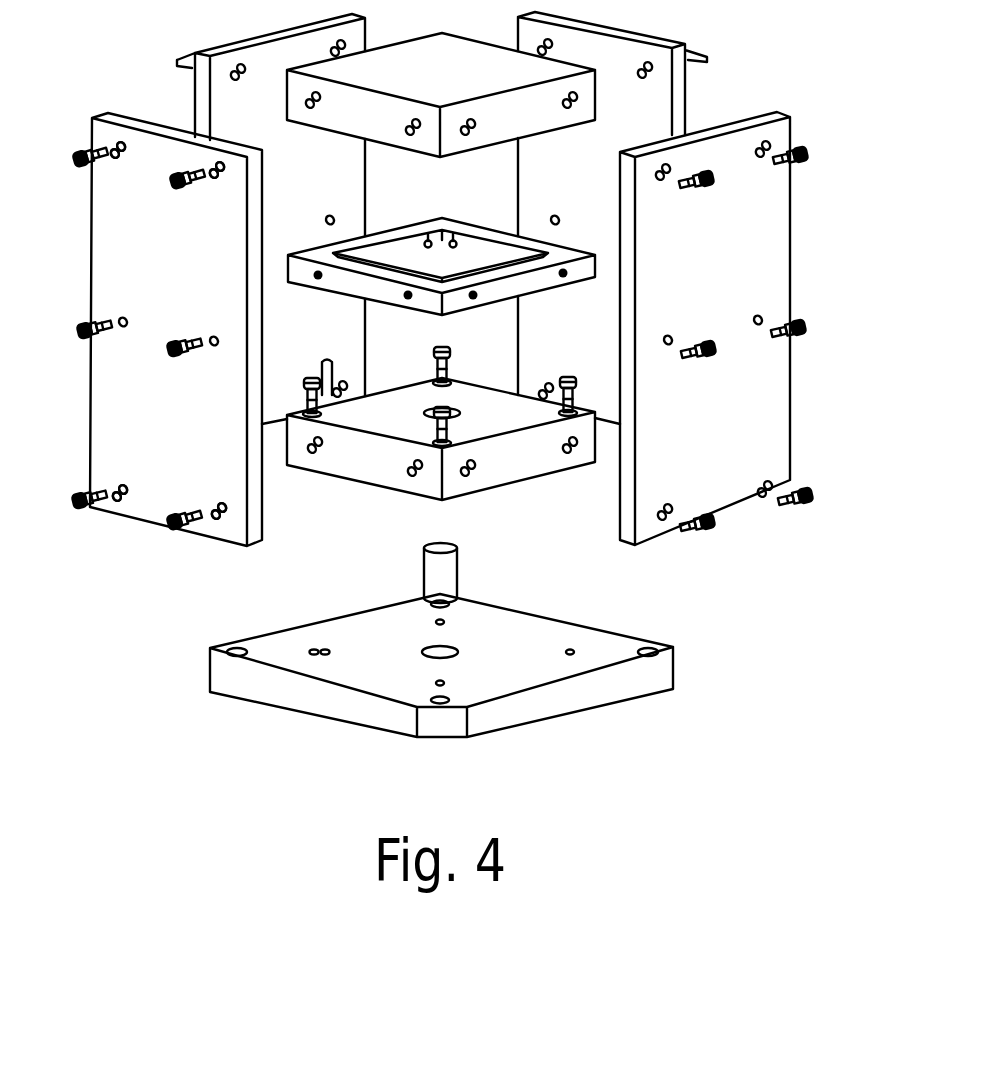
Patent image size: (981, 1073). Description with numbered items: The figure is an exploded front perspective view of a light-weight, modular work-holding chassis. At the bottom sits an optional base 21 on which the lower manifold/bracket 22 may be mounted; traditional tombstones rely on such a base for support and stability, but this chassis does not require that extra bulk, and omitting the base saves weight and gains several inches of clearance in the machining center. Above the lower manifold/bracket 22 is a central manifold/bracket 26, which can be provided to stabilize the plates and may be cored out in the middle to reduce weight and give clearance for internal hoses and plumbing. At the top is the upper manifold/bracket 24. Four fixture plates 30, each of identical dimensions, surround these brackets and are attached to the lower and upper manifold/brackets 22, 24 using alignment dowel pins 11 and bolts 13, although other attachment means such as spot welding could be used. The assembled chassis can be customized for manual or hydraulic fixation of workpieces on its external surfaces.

The alignment dowel pin 11 is at (128, 360).
The bolt 13 is at (443, 339).
The base 21 is at (522, 670).
The lower manifold/bracket 22 is at (516, 427).
The upper manifold/bracket 24 is at (466, 89).
The central manifold/bracket 26 is at (352, 283).
The fixture plate 30 is at (440, 279).